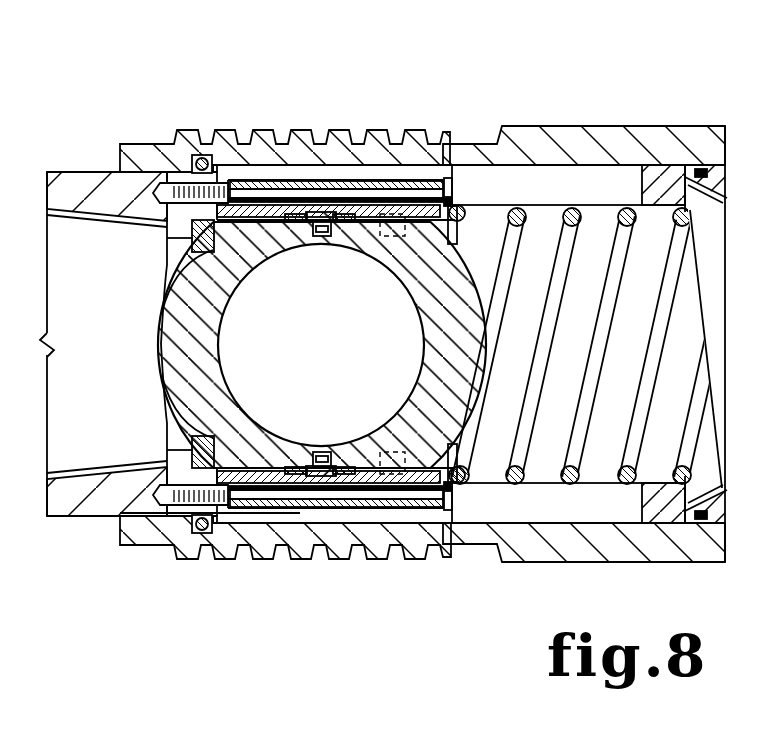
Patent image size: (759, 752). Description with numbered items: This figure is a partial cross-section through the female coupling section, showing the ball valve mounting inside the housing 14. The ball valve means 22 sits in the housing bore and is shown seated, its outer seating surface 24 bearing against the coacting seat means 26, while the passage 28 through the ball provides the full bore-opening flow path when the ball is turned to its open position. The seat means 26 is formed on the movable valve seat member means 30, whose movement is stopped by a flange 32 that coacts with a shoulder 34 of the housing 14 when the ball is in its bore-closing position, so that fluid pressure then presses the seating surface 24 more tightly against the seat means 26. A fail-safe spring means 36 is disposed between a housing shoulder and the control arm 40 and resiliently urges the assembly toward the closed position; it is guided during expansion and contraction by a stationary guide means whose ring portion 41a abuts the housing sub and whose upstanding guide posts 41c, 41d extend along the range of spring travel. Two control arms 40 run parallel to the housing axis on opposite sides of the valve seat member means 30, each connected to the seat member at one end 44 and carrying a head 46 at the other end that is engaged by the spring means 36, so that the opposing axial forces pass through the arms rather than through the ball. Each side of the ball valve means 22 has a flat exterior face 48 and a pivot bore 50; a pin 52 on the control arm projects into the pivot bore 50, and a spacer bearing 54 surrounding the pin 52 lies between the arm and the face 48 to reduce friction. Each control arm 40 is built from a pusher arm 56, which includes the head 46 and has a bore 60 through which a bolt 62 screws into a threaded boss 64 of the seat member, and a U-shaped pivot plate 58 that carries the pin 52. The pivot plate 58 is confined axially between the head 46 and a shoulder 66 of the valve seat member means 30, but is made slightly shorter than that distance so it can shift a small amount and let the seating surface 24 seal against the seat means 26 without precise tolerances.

The housing 14 is at (516, 126).
The ball valve means 22 is at (156, 312).
The outer seating surface 24 is at (163, 348).
The seat means 26 is at (168, 276).
The passage 28 is at (220, 345).
The valve seat member means 30 is at (170, 528).
The flange 32 is at (227, 173).
The shoulder 34 is at (215, 540).
The spring means 36 is at (595, 520).
The control arm 40 is at (295, 165).
The ring portion 41a is at (655, 185).
The guide post 41c is at (570, 185).
The guide post 41d is at (560, 512).
The end of control arm 44 is at (205, 215).
The head 46 is at (463, 210).
The flat exterior face 48 is at (248, 193).
The pivot bore 50 is at (383, 226).
The pin 52 is at (321, 237).
The spacer bearing 54 is at (293, 224).
The pusher arm 56 is at (447, 200).
The pivot plate 58 is at (372, 197).
The bore 60 is at (325, 187).
The bolt 62 is at (400, 207).
The threaded boss 64 is at (160, 190).
The shoulder 66 is at (205, 156).